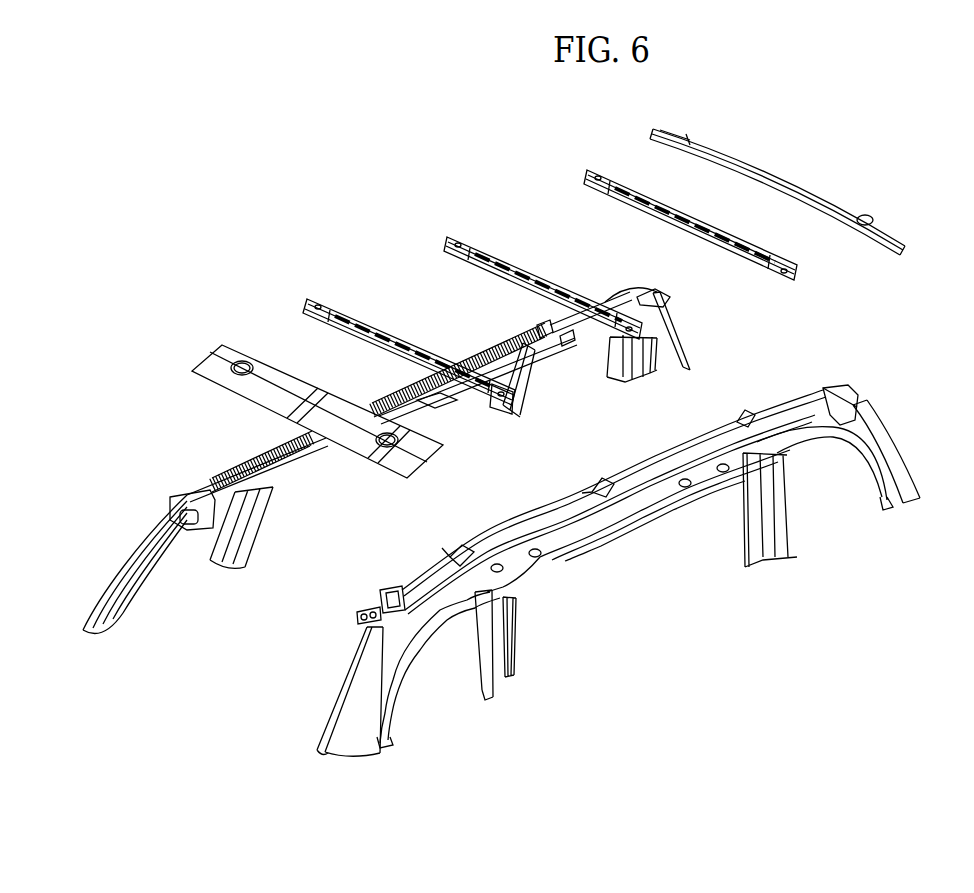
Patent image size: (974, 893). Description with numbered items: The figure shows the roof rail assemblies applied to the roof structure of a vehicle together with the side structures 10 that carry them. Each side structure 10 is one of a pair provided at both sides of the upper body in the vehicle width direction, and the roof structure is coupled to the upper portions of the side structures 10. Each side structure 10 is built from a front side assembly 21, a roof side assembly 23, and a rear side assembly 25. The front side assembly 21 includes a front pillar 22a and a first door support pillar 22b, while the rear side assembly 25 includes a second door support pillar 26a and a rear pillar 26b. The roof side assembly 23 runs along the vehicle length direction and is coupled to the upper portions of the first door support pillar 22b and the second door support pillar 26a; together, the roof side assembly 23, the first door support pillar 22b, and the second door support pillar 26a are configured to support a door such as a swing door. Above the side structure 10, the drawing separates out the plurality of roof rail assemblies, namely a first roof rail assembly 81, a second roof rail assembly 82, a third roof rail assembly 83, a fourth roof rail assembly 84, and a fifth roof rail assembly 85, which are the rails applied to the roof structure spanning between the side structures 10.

The side structure 10 is at (201, 473).
The front side assembly 21 is at (440, 645).
The front pillar 22a is at (367, 703).
The first door support pillar 22b is at (500, 635).
The roof side assembly 23 is at (556, 478).
The rear side assembly 25 is at (821, 467).
The second door support pillar 26a is at (778, 513).
The rear pillar 26b is at (893, 440).
The first roof rail assembly 81 is at (227, 402).
The second roof rail assembly 82 is at (342, 346).
The third roof rail assembly 83 is at (480, 279).
The fourth roof rail assembly 84 is at (650, 221).
The fifth roof rail assembly 85 is at (781, 155).